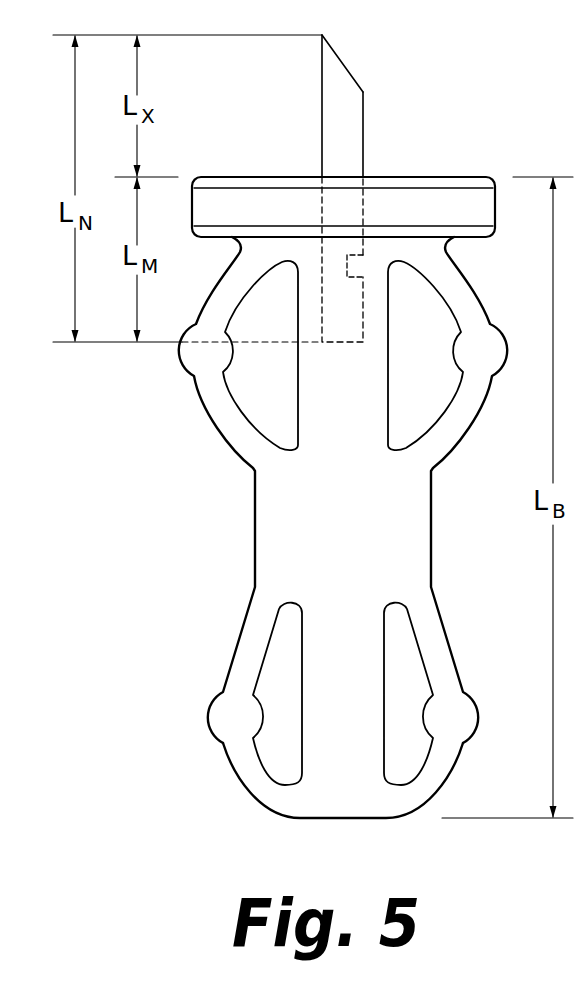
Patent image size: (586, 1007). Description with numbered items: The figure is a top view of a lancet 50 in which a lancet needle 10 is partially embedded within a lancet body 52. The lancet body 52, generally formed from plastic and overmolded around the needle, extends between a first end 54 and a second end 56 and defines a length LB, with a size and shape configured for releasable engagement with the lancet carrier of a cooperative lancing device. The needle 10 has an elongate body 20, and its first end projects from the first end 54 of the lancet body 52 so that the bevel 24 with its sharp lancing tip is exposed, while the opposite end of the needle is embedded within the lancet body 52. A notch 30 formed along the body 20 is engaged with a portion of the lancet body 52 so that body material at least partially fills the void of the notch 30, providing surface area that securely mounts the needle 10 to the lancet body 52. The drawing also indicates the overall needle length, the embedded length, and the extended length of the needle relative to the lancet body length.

The lancet needle 10 is at (318, 125).
The elongate body 20 is at (345, 137).
The bevel 24 is at (352, 64).
The notch 30 is at (362, 264).
The lancet 50 is at (536, 112).
The lancet body 52 is at (392, 535).
The first end 54 is at (456, 176).
The second end 56 is at (299, 831).